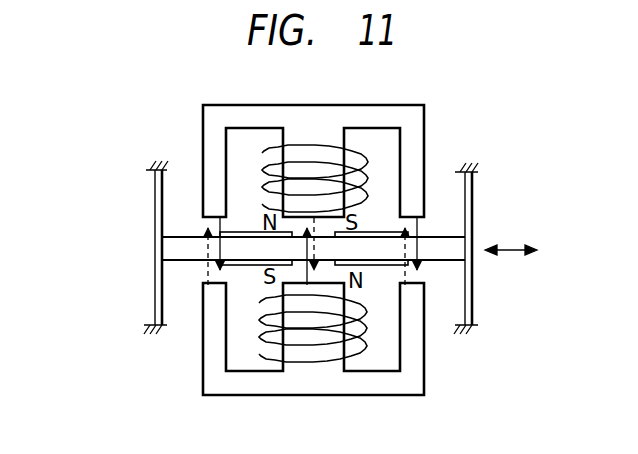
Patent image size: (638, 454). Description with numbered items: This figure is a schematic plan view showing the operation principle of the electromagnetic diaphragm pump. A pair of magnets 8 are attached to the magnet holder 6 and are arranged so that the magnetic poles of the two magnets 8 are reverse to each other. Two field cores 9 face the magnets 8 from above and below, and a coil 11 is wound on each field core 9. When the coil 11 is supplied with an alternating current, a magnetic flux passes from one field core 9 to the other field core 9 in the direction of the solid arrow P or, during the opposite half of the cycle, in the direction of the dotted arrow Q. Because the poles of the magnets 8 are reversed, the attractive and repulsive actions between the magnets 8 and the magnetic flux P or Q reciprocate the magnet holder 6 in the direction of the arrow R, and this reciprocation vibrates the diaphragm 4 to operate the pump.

The diaphragm 4 is at (153, 200).
The magnet holder 6 is at (432, 248).
The magnets 8 is at (230, 267).
The field core 9 is at (417, 120).
The coil 11 is at (316, 140).
The solid arrow (magnetic flux direction) P is at (300, 249).
The dotted arrow (magnetic flux direction) Q is at (199, 237).
The arrow (direction of reciprocation) R is at (508, 252).